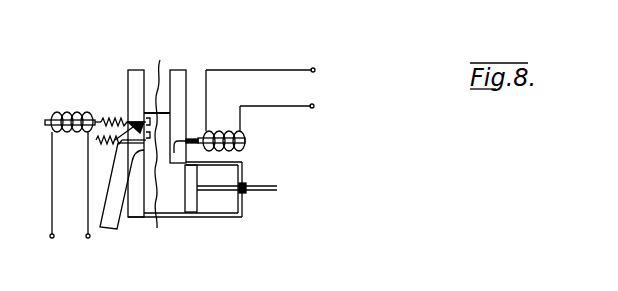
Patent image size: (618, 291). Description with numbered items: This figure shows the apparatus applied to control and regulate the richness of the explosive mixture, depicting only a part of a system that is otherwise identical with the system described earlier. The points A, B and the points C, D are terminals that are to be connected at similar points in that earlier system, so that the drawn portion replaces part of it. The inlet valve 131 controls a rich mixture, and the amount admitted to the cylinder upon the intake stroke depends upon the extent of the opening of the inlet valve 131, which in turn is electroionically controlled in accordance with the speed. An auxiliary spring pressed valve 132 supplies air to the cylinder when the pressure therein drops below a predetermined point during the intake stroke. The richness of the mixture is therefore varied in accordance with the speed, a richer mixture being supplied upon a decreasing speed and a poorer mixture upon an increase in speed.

The inlet valve 131 is at (157, 135).
The auxiliary spring pressed valve 132 is at (202, 203).
The connection point A is at (46, 199).
The connection point B is at (83, 198).
The connection point C is at (261, 87).
The connection point D is at (278, 118).